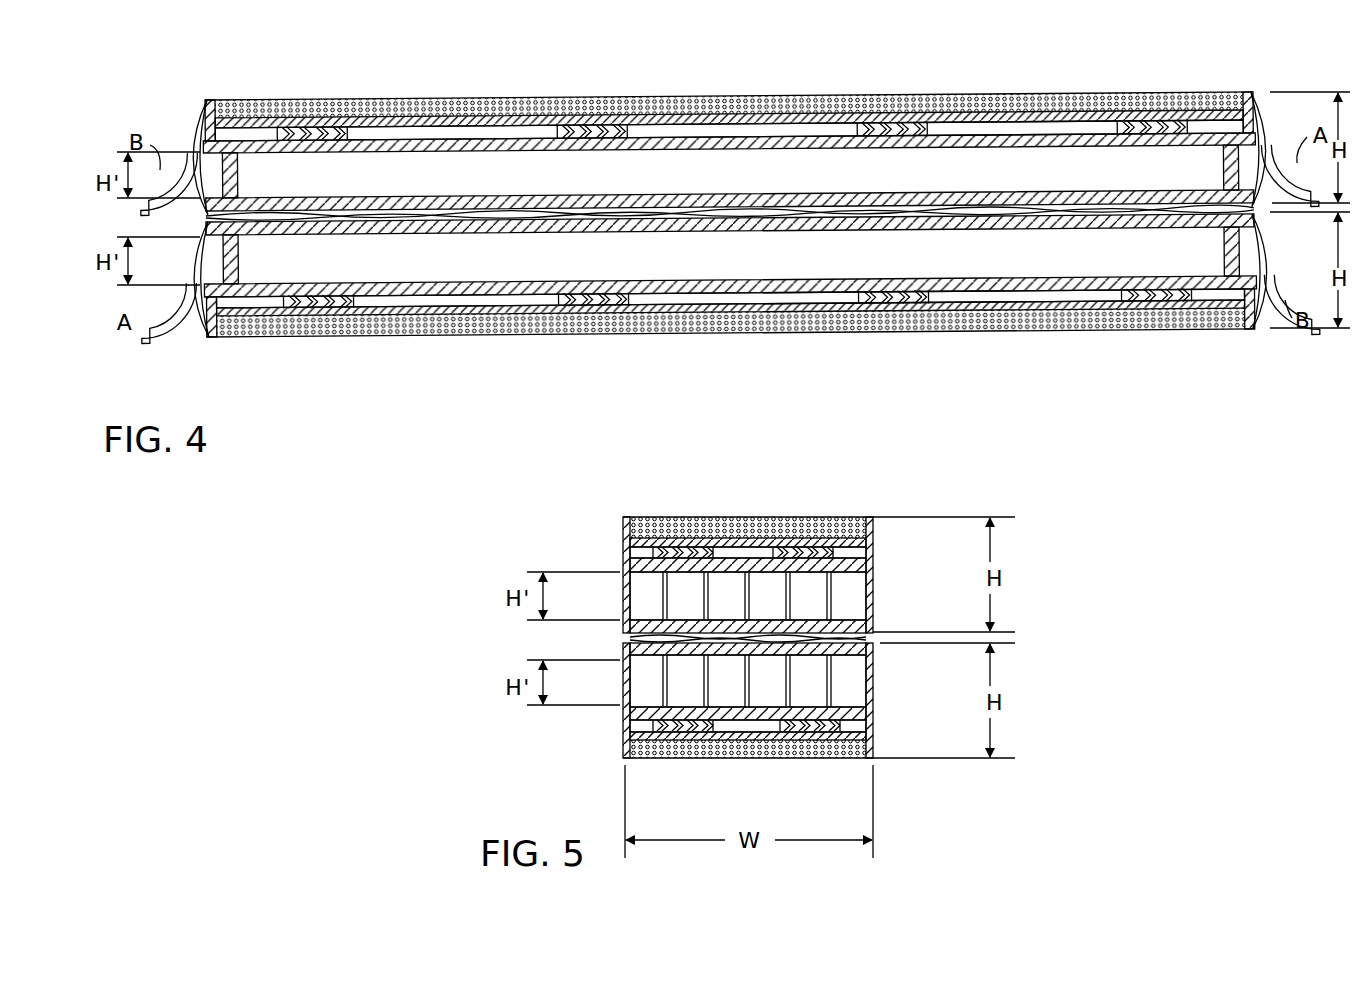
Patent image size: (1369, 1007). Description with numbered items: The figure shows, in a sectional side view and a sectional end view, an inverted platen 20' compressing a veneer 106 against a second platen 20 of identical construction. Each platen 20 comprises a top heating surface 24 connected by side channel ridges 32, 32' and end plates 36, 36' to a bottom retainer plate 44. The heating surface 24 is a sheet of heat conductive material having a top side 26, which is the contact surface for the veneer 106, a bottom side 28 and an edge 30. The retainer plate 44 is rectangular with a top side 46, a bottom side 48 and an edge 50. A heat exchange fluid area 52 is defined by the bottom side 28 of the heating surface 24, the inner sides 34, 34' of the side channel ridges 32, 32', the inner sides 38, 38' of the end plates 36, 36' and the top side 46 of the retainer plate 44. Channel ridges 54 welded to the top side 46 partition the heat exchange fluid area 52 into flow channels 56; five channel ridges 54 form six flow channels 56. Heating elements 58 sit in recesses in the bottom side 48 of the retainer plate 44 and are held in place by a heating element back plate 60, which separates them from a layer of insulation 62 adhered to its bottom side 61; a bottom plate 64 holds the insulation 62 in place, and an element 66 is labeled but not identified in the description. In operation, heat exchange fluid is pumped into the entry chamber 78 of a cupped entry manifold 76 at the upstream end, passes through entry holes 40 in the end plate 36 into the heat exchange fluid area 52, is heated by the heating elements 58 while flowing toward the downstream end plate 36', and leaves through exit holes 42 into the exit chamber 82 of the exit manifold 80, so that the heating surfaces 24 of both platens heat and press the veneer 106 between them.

In FIG. 4, the platen 20 is at (731, 363).
In FIG. 5, the platen 20 is at (819, 783).
In FIG. 4, the second insulated panel 20' is at (729, 65).
In FIG. 5, the second insulated panel 20' is at (815, 466).
In FIG. 4, the heating surface 24 is at (207, 213).
In FIG. 5, the heating surface 24 is at (623, 650).
In FIG. 4, the top side of heating surface 26 is at (993, 218).
In FIG. 4, the bottom side of heating surface 28 is at (1085, 150).
In FIG. 5, the bottom side of heating surface 28 is at (623, 625).
In FIG. 4, the edge of heating surface 30 is at (1265, 217).
In FIG. 5, the edge of heating surface 30 is at (873, 625).
In FIG. 5, the side channel ridge 32 is at (756, 637).
In FIG. 5, the side channel ridge 32' is at (756, 645).
In FIG. 5, the inner side of side channel ridge 34 is at (809, 643).
In FIG. 5, the inner side of side channel ridge 34' is at (589, 608).
In FIG. 4, the end plate 36 is at (744, 191).
In FIG. 4, the end plate 36' is at (705, 199).
In FIG. 4, the inner side of end plate 38 is at (268, 190).
In FIG. 4, the inner side of end plate 38' is at (1180, 181).
In FIG. 4, the entry holes 40 is at (238, 172).
In FIG. 4, the exit holes 42 is at (1222, 163).
In FIG. 4, the retainer plate 44 is at (200, 280).
In FIG. 5, the retainer plate 44 is at (870, 725).
In FIG. 4, the top side of retainer plate 46 is at (207, 243).
In FIG. 5, the top side of retainer plate 46 is at (623, 707).
In FIG. 4, the bottom side of retainer plate 48 is at (248, 338).
In FIG. 5, the bottom side of retainer plate 48 is at (628, 762).
In FIG. 4, the edge of retainer plate 50 is at (1267, 265).
In FIG. 5, the edge of retainer plate 50 is at (875, 563).
In FIG. 4, the heat exchange fluid area 52 is at (667, 158).
In FIG. 5, the heat exchange fluid area 52 is at (643, 577).
In FIG. 5, the channel ridges 54 is at (680, 577).
In FIG. 5, the flow channels 56 is at (623, 553).
In FIG. 4, the heating elements 58 is at (310, 100).
In FIG. 5, the heating elements 58 is at (657, 520).
In FIG. 4, the heating element back plate 60 is at (1150, 334).
In FIG. 5, the heating element back plate 60 is at (623, 540).
In FIG. 4, the bottom side of heating element back plate 61 is at (975, 336).
In FIG. 5, the bottom side of heating element back plate 61 is at (830, 760).
In FIG. 4, the layer of insulation 62 is at (1027, 357).
In FIG. 5, the layer of insulation 62 is at (865, 518).
In FIG. 4, the bottom plate 64 is at (380, 338).
In FIG. 5, the bottom plate 64 is at (866, 517).
In FIG. 4, the reinforcing strip 66 is at (480, 338).
In FIG. 4, the entry manifold 76 is at (200, 322).
In FIG. 4, the entry chamber 78 is at (203, 100).
In FIG. 4, the exit manifold 80 is at (190, 152).
In FIG. 4, the exit chamber 82 is at (188, 160).
In FIG. 4, the veneer 106 is at (745, 220).
In FIG. 5, the veneer 106 is at (870, 650).